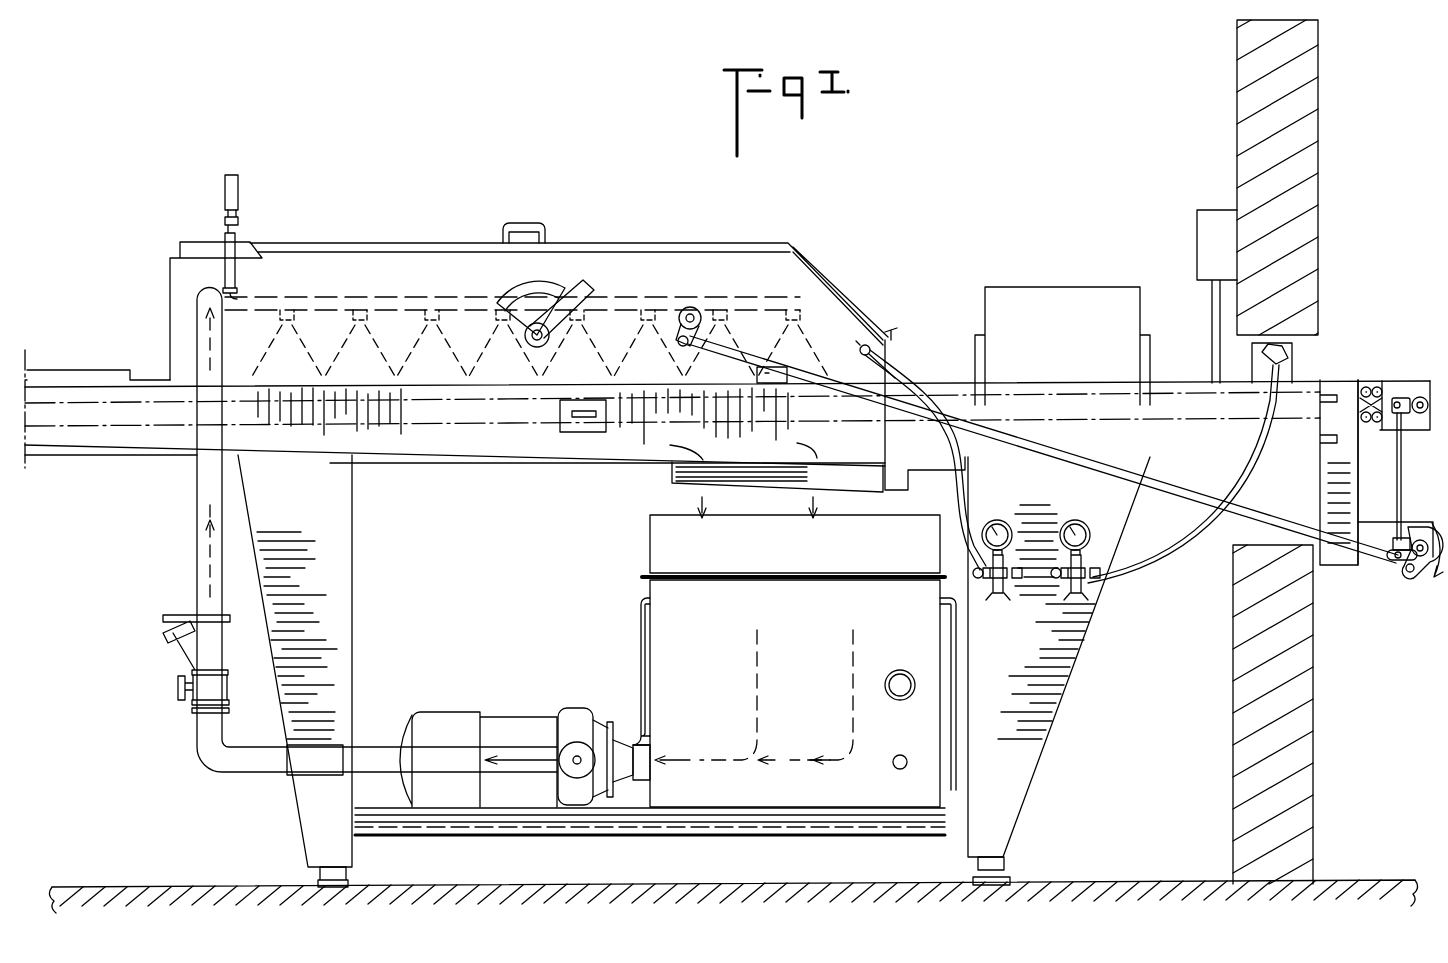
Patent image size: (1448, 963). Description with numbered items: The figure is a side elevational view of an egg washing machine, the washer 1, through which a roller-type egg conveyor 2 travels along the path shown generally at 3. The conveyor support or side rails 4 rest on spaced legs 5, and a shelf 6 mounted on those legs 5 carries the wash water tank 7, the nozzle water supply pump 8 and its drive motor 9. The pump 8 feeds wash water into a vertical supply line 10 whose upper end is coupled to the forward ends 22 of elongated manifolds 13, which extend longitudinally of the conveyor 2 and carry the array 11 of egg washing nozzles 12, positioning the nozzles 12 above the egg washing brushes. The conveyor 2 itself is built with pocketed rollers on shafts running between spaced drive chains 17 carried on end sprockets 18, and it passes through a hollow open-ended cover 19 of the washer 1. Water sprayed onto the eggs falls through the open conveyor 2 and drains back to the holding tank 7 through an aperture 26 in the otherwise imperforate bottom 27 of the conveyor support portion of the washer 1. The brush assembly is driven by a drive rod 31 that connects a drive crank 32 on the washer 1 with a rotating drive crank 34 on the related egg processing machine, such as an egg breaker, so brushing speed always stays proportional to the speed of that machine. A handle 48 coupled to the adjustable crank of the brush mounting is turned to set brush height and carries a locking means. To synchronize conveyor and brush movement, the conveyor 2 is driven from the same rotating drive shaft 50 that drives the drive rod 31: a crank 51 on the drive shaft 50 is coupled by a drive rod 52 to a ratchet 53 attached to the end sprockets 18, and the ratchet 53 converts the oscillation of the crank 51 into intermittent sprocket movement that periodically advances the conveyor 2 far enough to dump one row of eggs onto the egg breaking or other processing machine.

The washer 1 is at (819, 252).
The egg conveyor 2 is at (20, 290).
The conveyor path 3 is at (935, 222).
The conveyor support or side rails 4 is at (241, 386).
The legs 5 is at (308, 528).
The shelf 6 is at (768, 818).
The wash water tank 7 is at (802, 632).
The nozzle water supply pump 8 is at (574, 710).
The drive motor 9 is at (460, 715).
The supply line 10 is at (197, 500).
The nozzle array 11 is at (413, 285).
The egg washing nozzles 12 is at (368, 322).
The manifolds 13 is at (693, 316).
The drive chains 17 is at (1376, 386).
The end sprockets 18 is at (1422, 431).
The cover 19 is at (672, 285).
The forward ends 22 is at (246, 296).
The aperture 26 is at (773, 487).
The bottom 27 is at (480, 456).
The drive rod 31 is at (1052, 455).
The drive crank 32 is at (677, 342).
The rotating drive crank 34 is at (1405, 571).
The handle 48 is at (582, 284).
The drive shaft 50 is at (1414, 538).
The crank 51 is at (1395, 538).
The drive rod 52 is at (1388, 467).
The ratchet 53 is at (1397, 397).